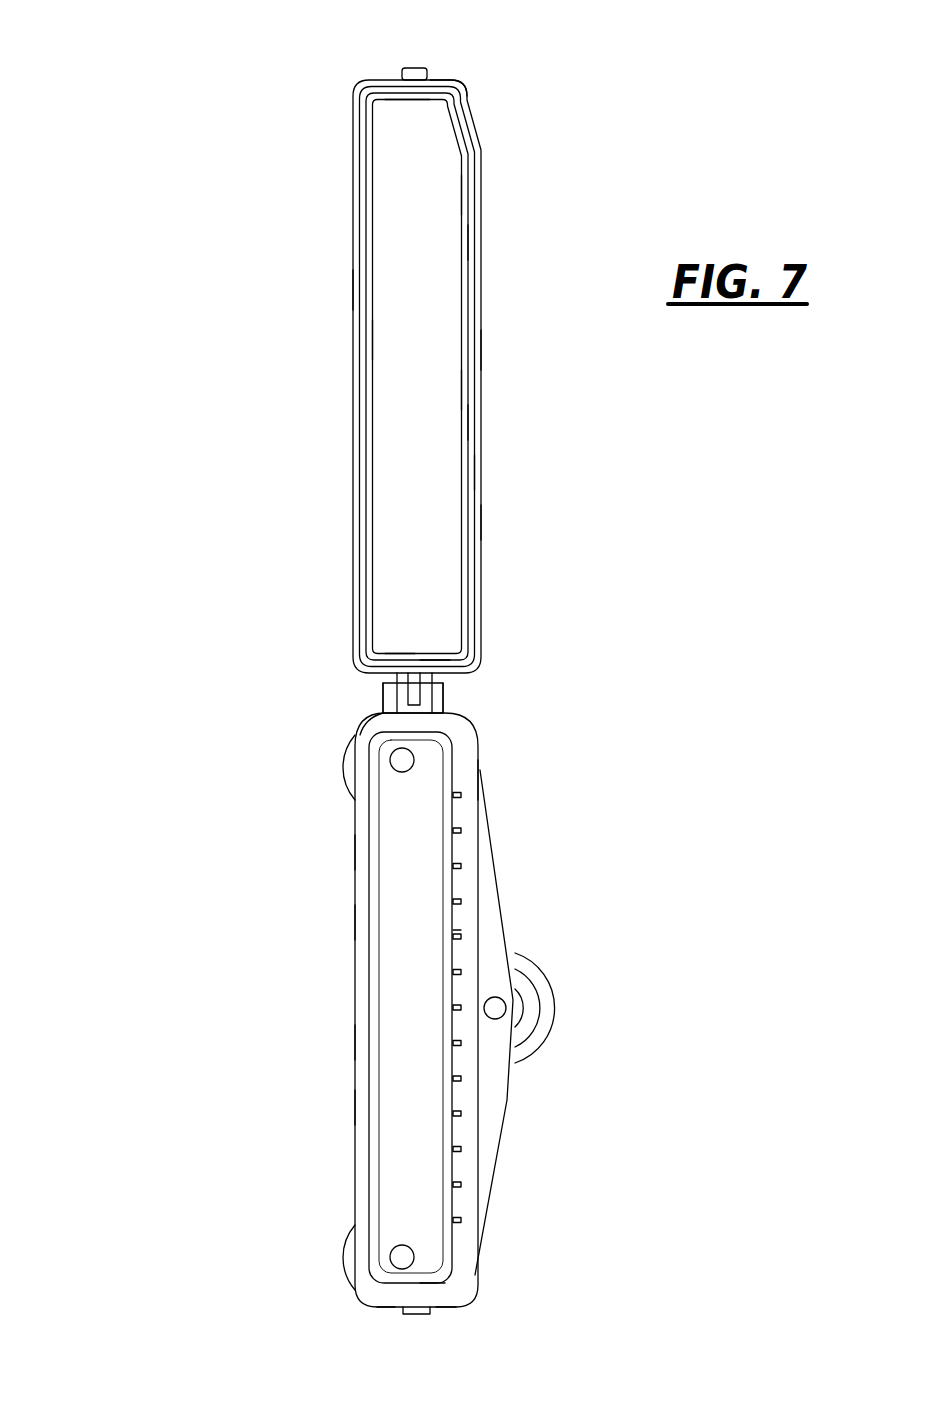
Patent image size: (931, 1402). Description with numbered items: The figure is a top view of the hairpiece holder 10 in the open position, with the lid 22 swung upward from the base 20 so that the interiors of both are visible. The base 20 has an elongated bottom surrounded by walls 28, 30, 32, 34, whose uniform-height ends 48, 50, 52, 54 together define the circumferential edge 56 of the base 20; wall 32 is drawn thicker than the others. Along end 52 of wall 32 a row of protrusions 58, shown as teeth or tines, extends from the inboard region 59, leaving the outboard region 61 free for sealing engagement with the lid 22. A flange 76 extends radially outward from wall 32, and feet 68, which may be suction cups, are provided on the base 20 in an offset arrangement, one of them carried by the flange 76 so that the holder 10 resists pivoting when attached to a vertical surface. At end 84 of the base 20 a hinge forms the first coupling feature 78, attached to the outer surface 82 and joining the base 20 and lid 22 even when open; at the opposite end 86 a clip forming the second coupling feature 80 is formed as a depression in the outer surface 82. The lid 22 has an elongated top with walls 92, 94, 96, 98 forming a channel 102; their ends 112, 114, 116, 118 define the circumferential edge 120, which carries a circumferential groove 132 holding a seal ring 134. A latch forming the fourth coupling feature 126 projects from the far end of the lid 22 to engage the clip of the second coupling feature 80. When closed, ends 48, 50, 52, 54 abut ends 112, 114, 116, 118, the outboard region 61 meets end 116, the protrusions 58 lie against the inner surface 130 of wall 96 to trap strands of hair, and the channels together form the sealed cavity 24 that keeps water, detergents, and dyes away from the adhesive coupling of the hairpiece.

The hairpiece holder 10 is at (197, 283).
The base 20 is at (354, 976).
The lid 22 is at (350, 447).
The sealed cavity 24 is at (404, 1146).
The wall 28 is at (355, 1040).
The wall 30 is at (450, 702).
The wall 32 is at (483, 776).
The wall 34 is at (445, 1306).
The end 48 is at (360, 1105).
The end 50 is at (378, 718).
The end 52 is at (460, 769).
The end 54 is at (437, 1292).
The circumferential edge 56 is at (354, 921).
The protrusions 58 is at (466, 936).
The inboard region 59 is at (456, 922).
The outboard region 61 is at (463, 957).
The feet 68 is at (345, 776).
The flange 76 is at (492, 1086).
The first coupling feature 78 is at (446, 693).
The second coupling feature 80 is at (420, 1314).
The outer surface 82 is at (355, 850).
The end 84 is at (368, 723).
The end 86 is at (387, 1306).
The wall 92 is at (377, 340).
The wall 94 is at (399, 657).
The wall 96 is at (462, 388).
The wall 98 is at (404, 100).
The channel 102 is at (458, 190).
The end 112 is at (355, 290).
The end 114 is at (433, 663).
The end 116 is at (478, 470).
The end 118 is at (440, 83).
The circumferential edge 120 is at (483, 347).
The fourth coupling feature 126 is at (416, 66).
The inner surface 130 is at (460, 238).
The circumferential groove 132 is at (479, 518).
The seal ring 134 is at (470, 420).